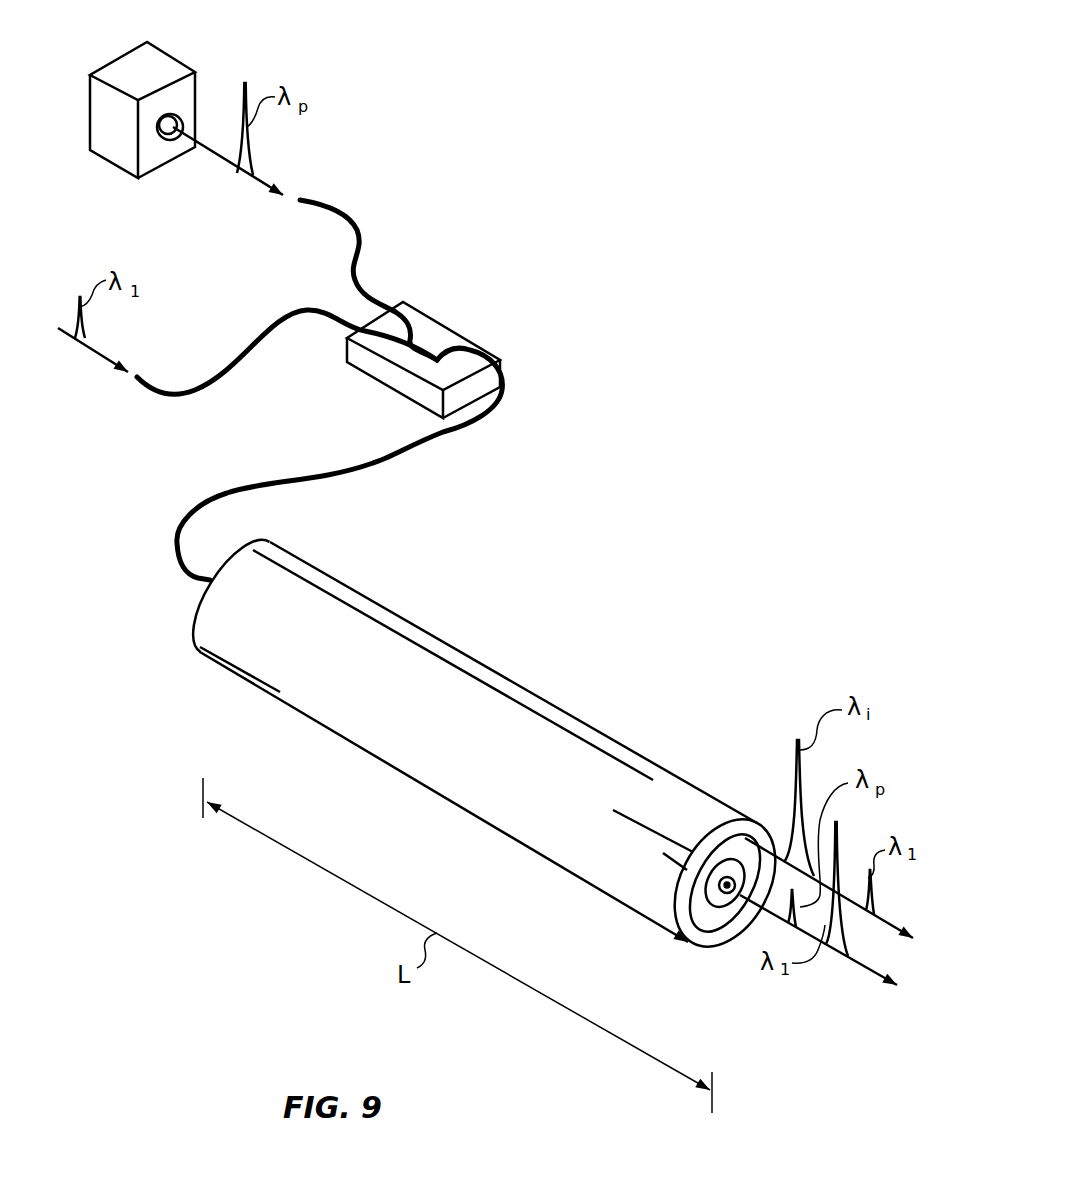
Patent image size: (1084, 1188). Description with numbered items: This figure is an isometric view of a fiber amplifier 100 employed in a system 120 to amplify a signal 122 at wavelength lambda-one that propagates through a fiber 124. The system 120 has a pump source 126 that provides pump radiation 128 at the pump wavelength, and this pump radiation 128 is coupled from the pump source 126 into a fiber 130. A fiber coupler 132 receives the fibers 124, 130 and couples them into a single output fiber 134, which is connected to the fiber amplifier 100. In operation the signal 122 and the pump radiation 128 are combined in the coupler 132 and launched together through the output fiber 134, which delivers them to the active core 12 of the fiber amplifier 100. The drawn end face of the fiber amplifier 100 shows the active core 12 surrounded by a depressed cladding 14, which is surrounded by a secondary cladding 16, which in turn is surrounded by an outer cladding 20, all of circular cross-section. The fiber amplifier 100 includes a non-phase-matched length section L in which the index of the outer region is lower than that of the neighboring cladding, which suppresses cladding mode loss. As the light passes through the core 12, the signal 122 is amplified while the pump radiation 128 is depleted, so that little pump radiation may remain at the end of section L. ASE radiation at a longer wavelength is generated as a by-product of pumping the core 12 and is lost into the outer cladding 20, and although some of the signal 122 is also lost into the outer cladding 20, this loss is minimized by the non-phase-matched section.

The active core 12 is at (713, 887).
The depressed cladding 14 is at (738, 855).
The secondary cladding 16 is at (683, 940).
The outer cladding 20 is at (700, 937).
The fiber amplifier 100 is at (600, 728).
The system 120 is at (730, 105).
The signal 122 is at (100, 353).
The fiber 124 is at (240, 363).
The pump source 126 is at (160, 46).
The pump radiation 128 is at (223, 163).
The fiber 130 is at (338, 213).
The fiber coupler 132 is at (433, 312).
The output fiber 134 is at (377, 463).